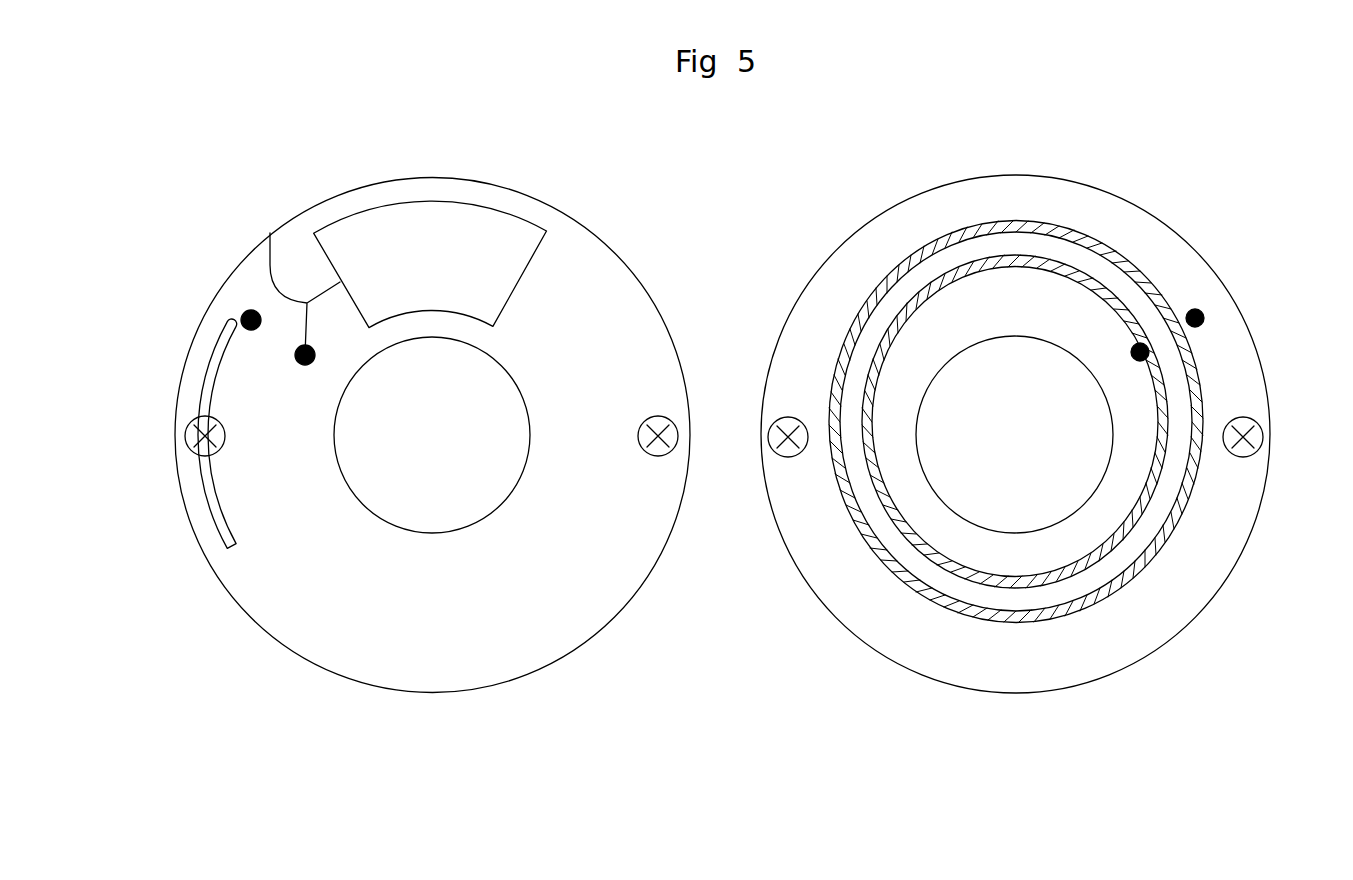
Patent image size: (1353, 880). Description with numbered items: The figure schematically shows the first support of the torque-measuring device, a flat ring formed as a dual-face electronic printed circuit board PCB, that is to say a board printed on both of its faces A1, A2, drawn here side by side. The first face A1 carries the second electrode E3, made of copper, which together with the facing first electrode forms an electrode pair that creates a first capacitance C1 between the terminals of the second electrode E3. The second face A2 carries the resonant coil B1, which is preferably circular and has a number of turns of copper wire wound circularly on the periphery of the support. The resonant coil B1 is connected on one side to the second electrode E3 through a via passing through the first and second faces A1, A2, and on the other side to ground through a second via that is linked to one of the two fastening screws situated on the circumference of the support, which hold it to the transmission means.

The electronic printed circuit board PCB is at (630, 322).
The second electrode E3 is at (345, 242).
The first capacitance C1 is at (270, 233).
The first face A1 is at (426, 438).
The second face A2 is at (1028, 438).
The resonant coil B1 is at (1102, 240).